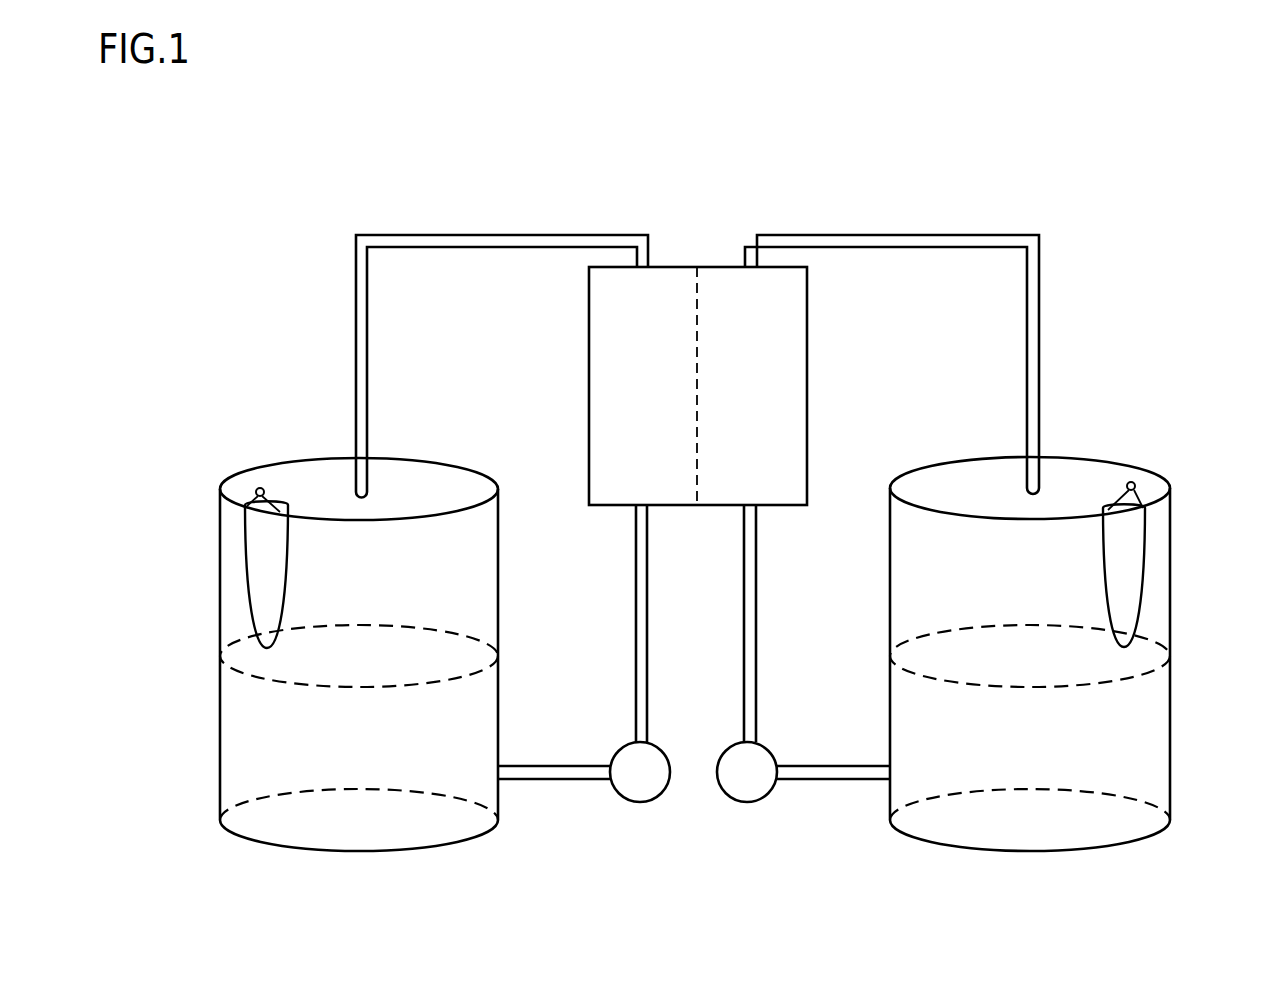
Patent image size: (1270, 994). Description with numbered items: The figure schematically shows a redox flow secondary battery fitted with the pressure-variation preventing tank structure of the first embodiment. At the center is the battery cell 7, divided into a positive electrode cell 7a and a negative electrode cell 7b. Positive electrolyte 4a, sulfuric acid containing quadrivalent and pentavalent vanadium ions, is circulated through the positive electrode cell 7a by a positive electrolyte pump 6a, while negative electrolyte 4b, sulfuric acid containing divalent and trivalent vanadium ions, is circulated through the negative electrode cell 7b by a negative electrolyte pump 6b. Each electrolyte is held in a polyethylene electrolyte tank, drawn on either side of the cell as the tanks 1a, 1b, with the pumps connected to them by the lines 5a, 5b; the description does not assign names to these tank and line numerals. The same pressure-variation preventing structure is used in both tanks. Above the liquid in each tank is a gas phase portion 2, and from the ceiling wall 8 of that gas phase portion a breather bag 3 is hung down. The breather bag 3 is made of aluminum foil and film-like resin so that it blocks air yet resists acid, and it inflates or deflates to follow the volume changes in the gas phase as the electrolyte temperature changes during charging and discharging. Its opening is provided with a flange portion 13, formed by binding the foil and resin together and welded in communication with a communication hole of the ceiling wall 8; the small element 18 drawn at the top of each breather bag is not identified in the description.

The first electrolyte tank 1a is at (356, 822).
The second electrolyte tank 1b is at (1028, 818).
The gas phase portion 2 is at (430, 581).
The breather bag 3 is at (268, 569).
The positive electrolyte 4a is at (285, 742).
The negative electrolyte 4b is at (1100, 738).
The first supply pipe 5a is at (556, 775).
The second supply pipe 5b is at (830, 775).
The positive electrolyte pump 6a is at (638, 775).
The negative electrolyte pump 6b is at (748, 775).
The battery cell 7 is at (740, 178).
The positive electrode cell 7a is at (675, 300).
The negative electrode cell 7b is at (723, 300).
The ceiling wall 8 is at (306, 490).
The flange portion 13 is at (256, 496).
The terminal 18 is at (260, 487).